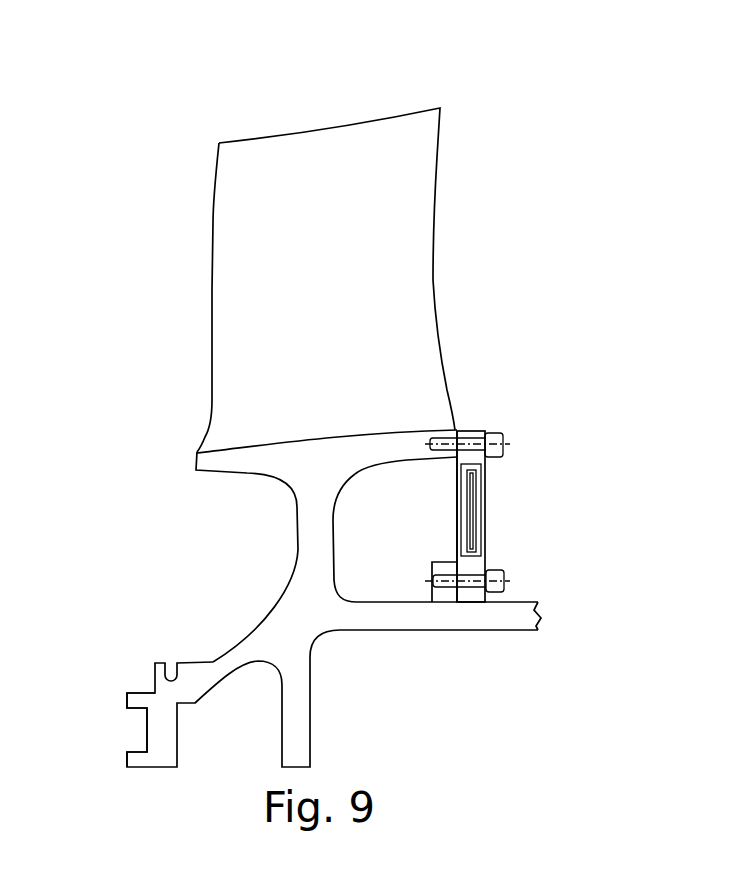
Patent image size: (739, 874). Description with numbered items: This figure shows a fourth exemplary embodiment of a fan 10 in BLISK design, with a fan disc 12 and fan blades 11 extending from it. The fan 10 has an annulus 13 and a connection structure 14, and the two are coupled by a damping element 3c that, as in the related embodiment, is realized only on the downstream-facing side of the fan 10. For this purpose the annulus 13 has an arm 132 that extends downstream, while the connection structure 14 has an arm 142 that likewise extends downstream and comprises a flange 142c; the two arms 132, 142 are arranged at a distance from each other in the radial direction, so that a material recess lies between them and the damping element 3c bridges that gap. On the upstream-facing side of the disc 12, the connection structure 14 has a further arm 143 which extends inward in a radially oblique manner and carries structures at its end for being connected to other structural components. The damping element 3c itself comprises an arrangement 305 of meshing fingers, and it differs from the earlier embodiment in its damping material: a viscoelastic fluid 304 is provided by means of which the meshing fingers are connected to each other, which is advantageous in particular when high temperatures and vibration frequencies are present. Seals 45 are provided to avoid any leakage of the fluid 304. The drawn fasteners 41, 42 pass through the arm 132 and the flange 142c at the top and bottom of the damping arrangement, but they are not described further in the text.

The fan 10 is at (287, 280).
The fan blades 11 is at (233, 333).
The fan disc 12 is at (295, 733).
The annulus 13 is at (277, 465).
The connection structure 14 is at (333, 607).
The arm 132 is at (455, 432).
The upper bolt 41 is at (500, 440).
The lower bolt 42 is at (505, 581).
The seals 45 is at (483, 556).
The arm 142 is at (430, 632).
The flange 142c is at (440, 567).
The viscoelastic fluid 304 is at (482, 507).
The arrangement of meshing fingers 305 is at (457, 500).
The damping element 3c is at (493, 496).
The arm 143 is at (157, 731).